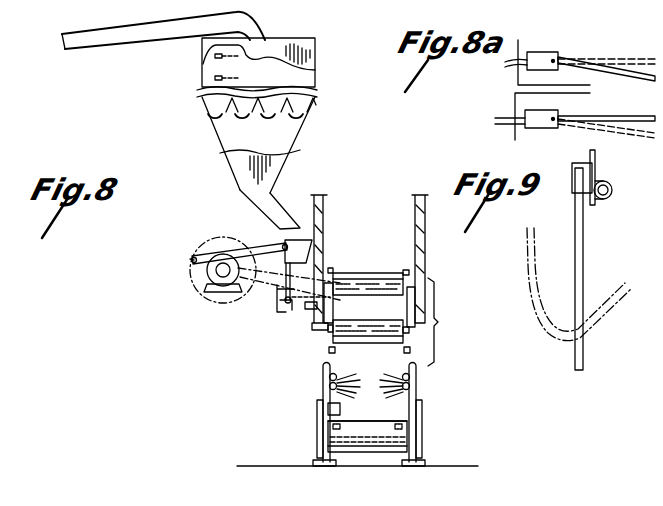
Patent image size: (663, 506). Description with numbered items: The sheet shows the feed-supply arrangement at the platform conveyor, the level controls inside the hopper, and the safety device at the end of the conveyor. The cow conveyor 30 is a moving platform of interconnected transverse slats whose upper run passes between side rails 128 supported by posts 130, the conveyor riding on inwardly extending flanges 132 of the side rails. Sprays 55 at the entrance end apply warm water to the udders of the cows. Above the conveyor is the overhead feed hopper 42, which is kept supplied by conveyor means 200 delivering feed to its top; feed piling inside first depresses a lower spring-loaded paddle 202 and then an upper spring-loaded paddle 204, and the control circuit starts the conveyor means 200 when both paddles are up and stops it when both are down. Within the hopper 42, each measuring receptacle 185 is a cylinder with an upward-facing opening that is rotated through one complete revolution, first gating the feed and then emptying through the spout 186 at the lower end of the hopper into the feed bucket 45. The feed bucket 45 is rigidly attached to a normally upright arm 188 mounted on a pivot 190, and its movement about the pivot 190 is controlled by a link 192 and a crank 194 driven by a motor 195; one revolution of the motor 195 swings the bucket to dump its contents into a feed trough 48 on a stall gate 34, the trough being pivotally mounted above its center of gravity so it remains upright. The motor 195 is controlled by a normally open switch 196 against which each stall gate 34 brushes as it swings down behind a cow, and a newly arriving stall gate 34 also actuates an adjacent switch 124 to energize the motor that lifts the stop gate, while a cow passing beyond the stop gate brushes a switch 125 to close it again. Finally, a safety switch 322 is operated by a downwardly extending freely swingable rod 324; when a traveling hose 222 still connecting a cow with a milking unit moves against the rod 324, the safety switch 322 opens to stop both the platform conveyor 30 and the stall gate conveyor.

In FIG. 8, the conveyor means 200 is at (129, 35).
In FIG. 8, the lower spring-loaded paddle 202 is at (232, 56).
In FIG. 8A, the lower spring-loaded paddle 202 is at (623, 72).
In FIG. 8, the upper spring-loaded paddle 204 is at (240, 78).
In FIG. 8A, the upper spring-loaded paddle 204 is at (643, 108).
In FIG. 8, the feed hopper 42 is at (316, 76).
In FIG. 8, the measuring receptacle 185 is at (300, 124).
In FIG. 8, the spout 186 is at (280, 200).
In FIG. 8, the feed bucket 45 is at (305, 240).
In FIG. 8, the crank 194 is at (200, 258).
In FIG. 8, the link 192 is at (272, 244).
In FIG. 8, the motor 195 is at (218, 268).
In FIG. 8, the pivot 190 is at (286, 308).
In FIG. 8, the upright arm 188 is at (302, 272).
In FIG. 8, the stall gate 34 is at (360, 314).
In FIG. 8, the feed trough 48 is at (388, 310).
In FIG. 8, the normally open switch 196 is at (329, 349).
In FIG. 8, the switch 124 is at (410, 350).
In FIG. 8, the sprays 55 is at (375, 355).
In FIG. 8, the side rails 128 is at (324, 401).
In FIG. 8, the posts 130 is at (320, 418).
In FIG. 8, the inwardly extending flanges 132 is at (326, 431).
In FIG. 8, the cow conveyor 30 is at (377, 407).
In FIG. 8, the switch 125 is at (346, 416).
In FIG. 9, the safety switch 322 is at (572, 163).
In FIG. 9, the freely swingable rod 324 is at (585, 247).
In FIG. 9, the traveling hose 222 is at (610, 287).